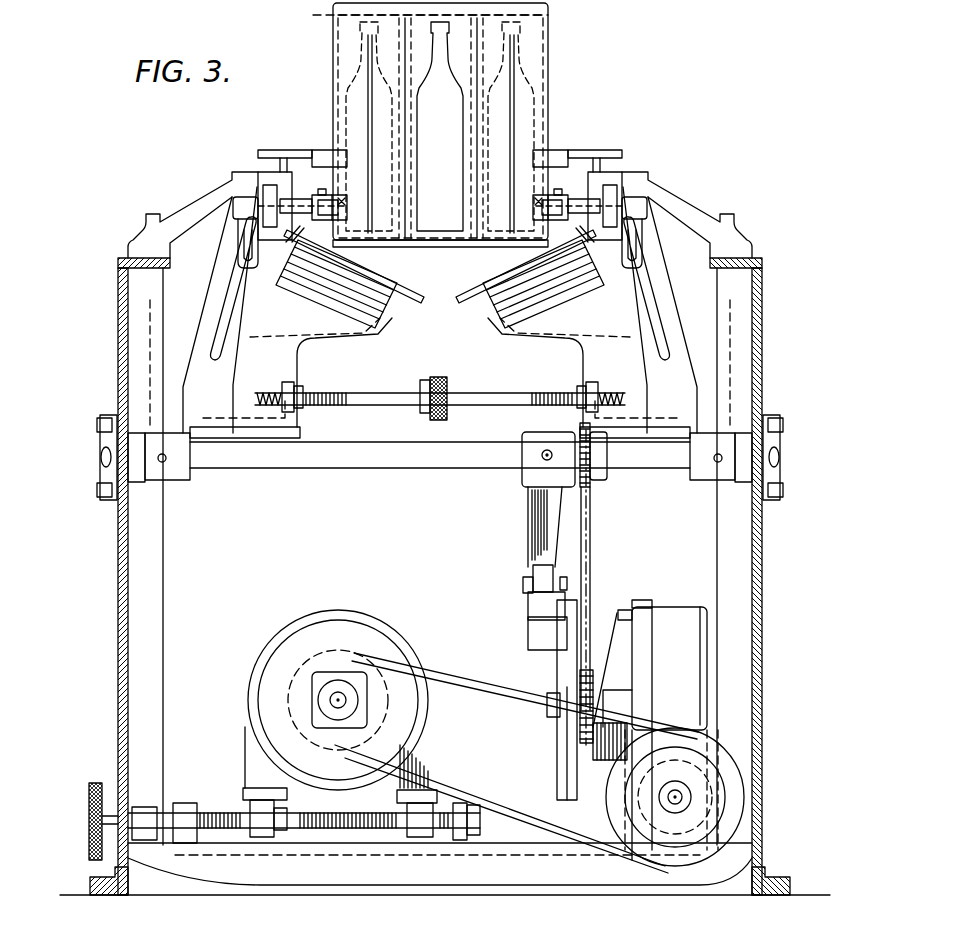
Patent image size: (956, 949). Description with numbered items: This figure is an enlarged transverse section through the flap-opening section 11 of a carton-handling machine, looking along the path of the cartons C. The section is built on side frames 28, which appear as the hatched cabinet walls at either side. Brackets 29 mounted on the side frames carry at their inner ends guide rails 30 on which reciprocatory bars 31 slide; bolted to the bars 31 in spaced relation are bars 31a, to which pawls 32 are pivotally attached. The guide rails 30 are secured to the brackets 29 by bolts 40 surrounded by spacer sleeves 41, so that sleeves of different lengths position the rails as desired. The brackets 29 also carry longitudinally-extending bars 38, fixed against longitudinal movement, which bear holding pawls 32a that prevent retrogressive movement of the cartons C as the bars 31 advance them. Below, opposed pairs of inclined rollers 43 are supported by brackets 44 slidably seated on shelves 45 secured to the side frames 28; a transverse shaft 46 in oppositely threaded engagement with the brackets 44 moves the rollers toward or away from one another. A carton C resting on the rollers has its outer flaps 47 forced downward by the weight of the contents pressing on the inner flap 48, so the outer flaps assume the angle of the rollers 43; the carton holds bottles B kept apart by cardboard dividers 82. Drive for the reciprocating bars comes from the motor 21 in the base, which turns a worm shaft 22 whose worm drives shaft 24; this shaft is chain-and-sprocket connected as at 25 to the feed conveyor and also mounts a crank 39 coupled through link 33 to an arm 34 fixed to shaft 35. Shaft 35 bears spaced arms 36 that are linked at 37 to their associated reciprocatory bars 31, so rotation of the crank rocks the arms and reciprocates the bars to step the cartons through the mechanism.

The flap-opening section 11 is at (278, 90).
The drive motor 21 is at (290, 650).
The worm shaft 22 is at (675, 797).
The shaft 24 is at (552, 720).
The chain and sprocket connection 25 is at (592, 548).
The side frames 28 is at (118, 299).
The brackets 29 is at (200, 202).
The guide rails 30 is at (266, 178).
The reciprocatory bars 31 is at (270, 228).
The spaced bars 31a is at (338, 202).
The pawls 32 is at (350, 210).
The holding pawls 32a is at (337, 150).
The link 33 is at (545, 600).
The connecting rod 34 is at (545, 520).
The shaft 35 is at (404, 463).
The spaced arms 36 is at (213, 310).
The link connection 37 is at (238, 212).
The longitudinally-extending bars 38 is at (292, 148).
The crank 39 is at (562, 667).
The bolts 40 is at (298, 200).
The spacer sleeves 41 is at (319, 216).
The rollers 43 is at (393, 290).
The brackets 44 is at (320, 343).
The shelves 45 is at (300, 432).
The transverse shaft 46 is at (472, 395).
The outer flaps 47 is at (380, 272).
The inner flap 48 is at (448, 246).
The dividers 82 is at (418, 17).
The bottles or jars B is at (352, 62).
The cartons C is at (548, 30).